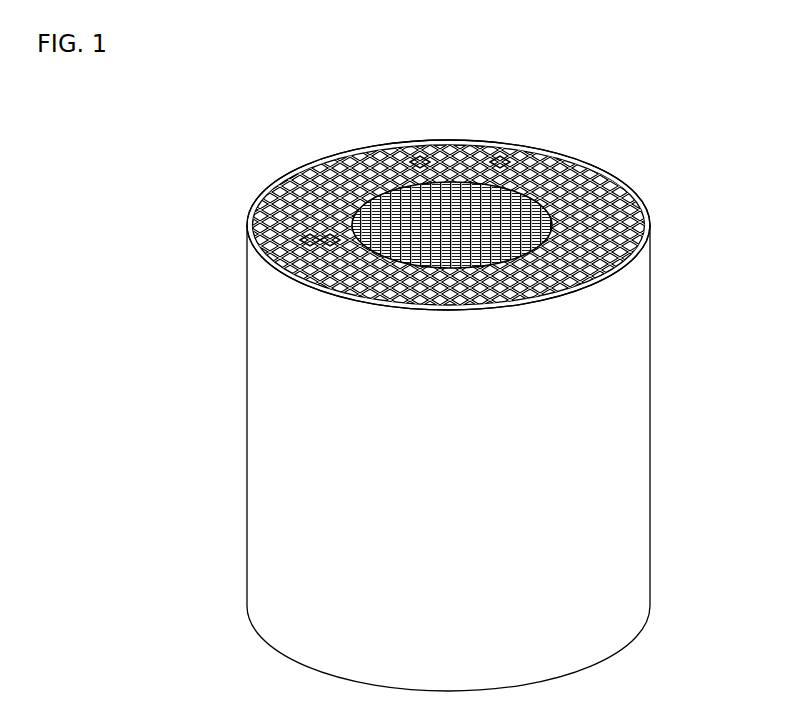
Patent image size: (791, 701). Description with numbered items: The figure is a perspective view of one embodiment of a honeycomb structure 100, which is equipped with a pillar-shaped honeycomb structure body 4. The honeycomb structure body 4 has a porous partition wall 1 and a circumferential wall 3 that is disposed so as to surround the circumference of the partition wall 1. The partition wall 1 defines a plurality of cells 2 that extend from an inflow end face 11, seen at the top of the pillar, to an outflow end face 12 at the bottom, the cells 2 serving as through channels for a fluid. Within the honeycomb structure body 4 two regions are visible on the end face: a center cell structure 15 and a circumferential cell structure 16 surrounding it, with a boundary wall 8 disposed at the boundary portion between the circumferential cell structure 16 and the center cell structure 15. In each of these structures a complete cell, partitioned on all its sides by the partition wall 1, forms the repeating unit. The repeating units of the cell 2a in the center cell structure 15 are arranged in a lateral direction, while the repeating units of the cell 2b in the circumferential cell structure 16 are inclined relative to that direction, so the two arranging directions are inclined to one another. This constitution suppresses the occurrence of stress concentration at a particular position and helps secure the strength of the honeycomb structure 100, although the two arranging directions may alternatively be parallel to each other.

The honeycomb structure 100 is at (731, 62).
The partition wall 1 is at (497, 160).
The cells 2 is at (448, 188).
The cell in the center cell structure 2a is at (541, 206).
The cell in the circumferential cell structure 2b is at (416, 160).
The circumferential wall 3 is at (630, 298).
The honeycomb structure body 4 is at (656, 409).
The boundary wall 8 is at (647, 209).
The inflow end face 11 is at (289, 162).
The outflow end face 12 is at (261, 641).
The center cell structure 15 is at (351, 214).
The circumferential cell structure 16 is at (312, 242).